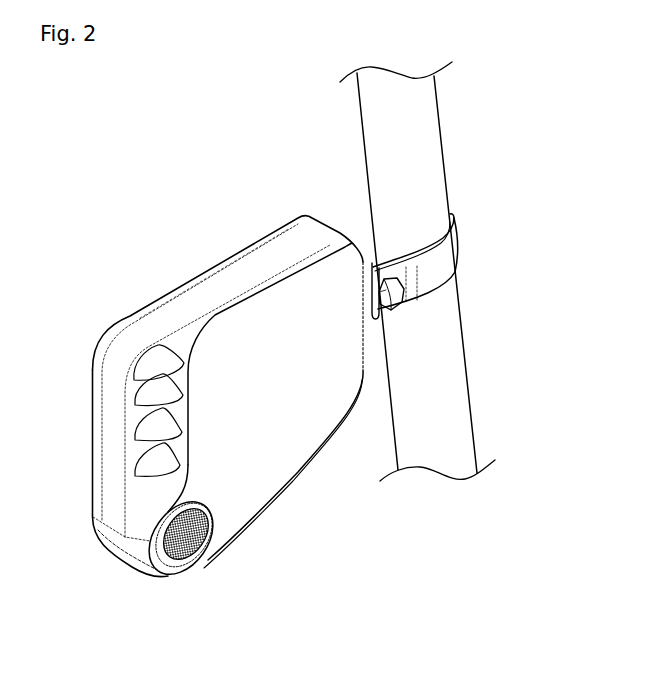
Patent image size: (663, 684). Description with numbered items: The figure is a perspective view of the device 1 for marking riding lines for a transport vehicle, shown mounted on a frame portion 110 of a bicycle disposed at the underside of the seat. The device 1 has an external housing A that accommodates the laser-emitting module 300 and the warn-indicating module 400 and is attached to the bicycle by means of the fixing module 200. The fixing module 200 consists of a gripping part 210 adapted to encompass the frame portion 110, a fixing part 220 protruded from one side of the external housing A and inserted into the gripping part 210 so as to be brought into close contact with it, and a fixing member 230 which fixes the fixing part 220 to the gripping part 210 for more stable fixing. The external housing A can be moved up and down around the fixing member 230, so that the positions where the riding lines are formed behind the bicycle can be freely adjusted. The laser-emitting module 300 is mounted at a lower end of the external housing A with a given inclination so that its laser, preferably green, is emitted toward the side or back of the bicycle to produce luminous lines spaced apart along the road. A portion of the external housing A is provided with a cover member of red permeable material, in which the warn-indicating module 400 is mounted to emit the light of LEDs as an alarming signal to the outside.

The device 1 is at (120, 240).
The external housing A is at (213, 297).
The frame portion 110 is at (432, 163).
The fixing module 200 is at (463, 247).
The gripping part 210 is at (453, 270).
The fixing part 220 is at (362, 233).
The fixing member 230 is at (410, 300).
The laser-emitting module 300 is at (212, 548).
The warn-indicating module 400 is at (112, 357).